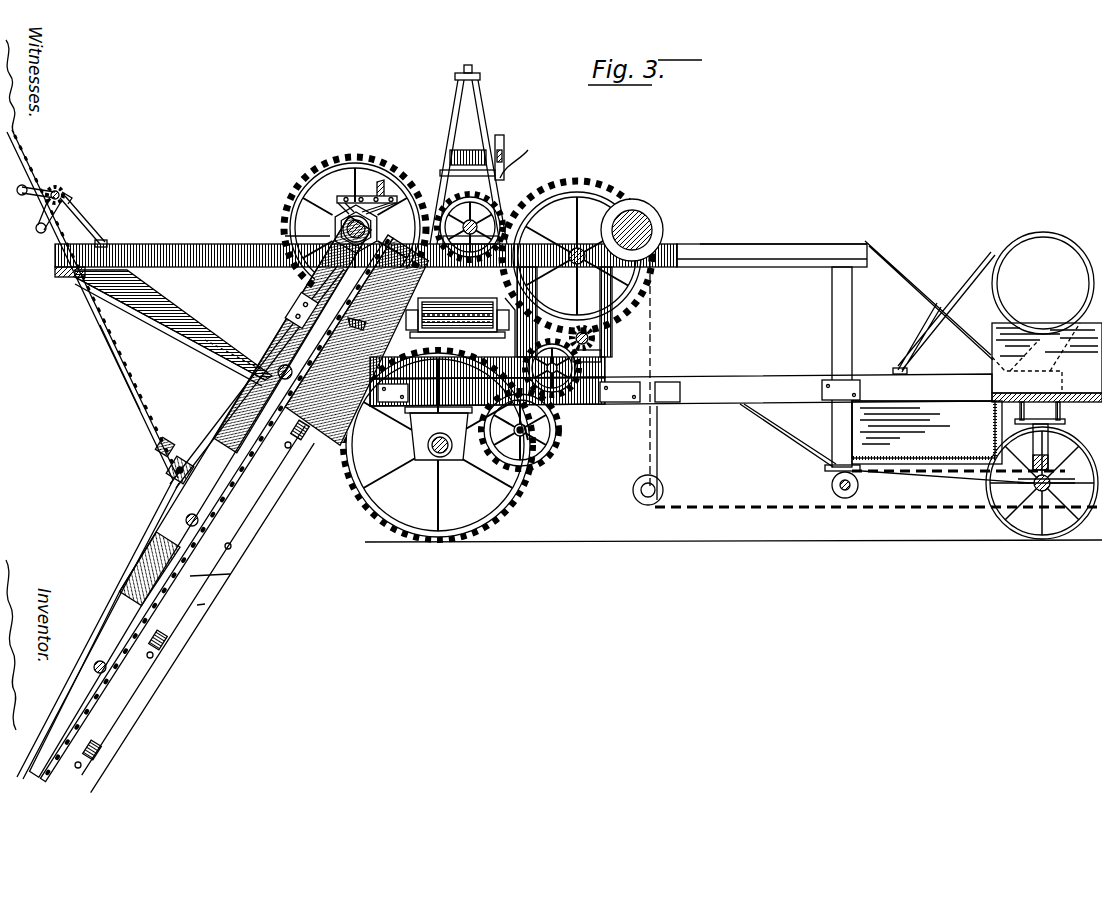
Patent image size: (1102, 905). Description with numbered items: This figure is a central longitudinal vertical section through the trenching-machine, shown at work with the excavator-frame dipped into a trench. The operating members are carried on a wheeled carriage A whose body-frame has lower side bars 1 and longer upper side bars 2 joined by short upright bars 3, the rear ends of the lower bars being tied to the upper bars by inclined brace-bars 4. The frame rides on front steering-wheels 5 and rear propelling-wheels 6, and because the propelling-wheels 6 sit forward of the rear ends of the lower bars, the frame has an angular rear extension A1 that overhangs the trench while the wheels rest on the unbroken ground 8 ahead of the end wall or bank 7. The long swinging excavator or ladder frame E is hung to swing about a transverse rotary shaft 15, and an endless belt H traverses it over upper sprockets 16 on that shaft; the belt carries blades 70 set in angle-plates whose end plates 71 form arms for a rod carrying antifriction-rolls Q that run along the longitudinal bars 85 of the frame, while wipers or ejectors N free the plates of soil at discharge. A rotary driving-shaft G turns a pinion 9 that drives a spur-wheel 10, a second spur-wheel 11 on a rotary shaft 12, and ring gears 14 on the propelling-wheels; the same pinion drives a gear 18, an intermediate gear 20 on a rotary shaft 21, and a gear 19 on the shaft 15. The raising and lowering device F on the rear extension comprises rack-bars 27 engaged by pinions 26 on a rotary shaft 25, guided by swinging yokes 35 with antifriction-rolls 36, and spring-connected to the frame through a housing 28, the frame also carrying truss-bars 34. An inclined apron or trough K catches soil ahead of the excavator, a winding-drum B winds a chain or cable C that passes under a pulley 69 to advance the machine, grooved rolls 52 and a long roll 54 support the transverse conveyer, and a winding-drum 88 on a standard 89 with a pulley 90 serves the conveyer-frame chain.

The lower side bars 1 is at (452, 298).
The upper side bars 2 is at (808, 245).
The upright bars 3 is at (834, 293).
The inclined brace-bars 4 is at (186, 333).
The front steering-wheels 5 is at (1074, 458).
The rear propelling-wheels 6 is at (438, 445).
The end wall or bank 7 is at (197, 605).
The unbroken ground 8 is at (368, 545).
The pinion 9 is at (596, 340).
The spur-wheel 10 is at (585, 374).
The second spur-wheel 11 is at (560, 436).
The rotary shaft 12 is at (506, 448).
The ring gears 14 is at (437, 462).
The rotary shaft 15 is at (394, 206).
The upper sprockets 16 is at (290, 236).
The gear 18 is at (535, 180).
The gear 19 is at (362, 154).
The intermediate gear 20 is at (526, 156).
The rotary shaft 21 is at (492, 208).
The rotary shaft 25 is at (72, 198).
The pinions 26 is at (66, 190).
The rack-bars 27 is at (132, 398).
The housing 28 is at (182, 452).
The truss-bars 34 is at (238, 418).
The swinging yokes 35 is at (50, 186).
The antifriction-rolls 36 is at (36, 228).
The grooved rolls 52 is at (503, 330).
The long roll 54 is at (457, 336).
The pulley 69 is at (634, 496).
The blades 70 is at (381, 192).
The end plates 71 is at (288, 447).
The longitudinal bars 85 is at (150, 558).
The winding-drum 88 is at (504, 150).
The standard 89 is at (458, 110).
The pulley 90 is at (474, 72).
The wheeled carriage A is at (772, 239).
The angular rear extension A1 is at (366, 270).
The winding-drum B is at (652, 216).
The chain or cable C is at (878, 489).
The excavator or ladder frame E is at (98, 629).
The raising and lowering device F is at (93, 305).
The rotary driving-shaft G is at (602, 355).
The endless belt H is at (190, 576).
The inclined apron or trough K is at (227, 514).
The wipers or ejectors N is at (344, 198).
The antifriction-rolls Q is at (195, 581).